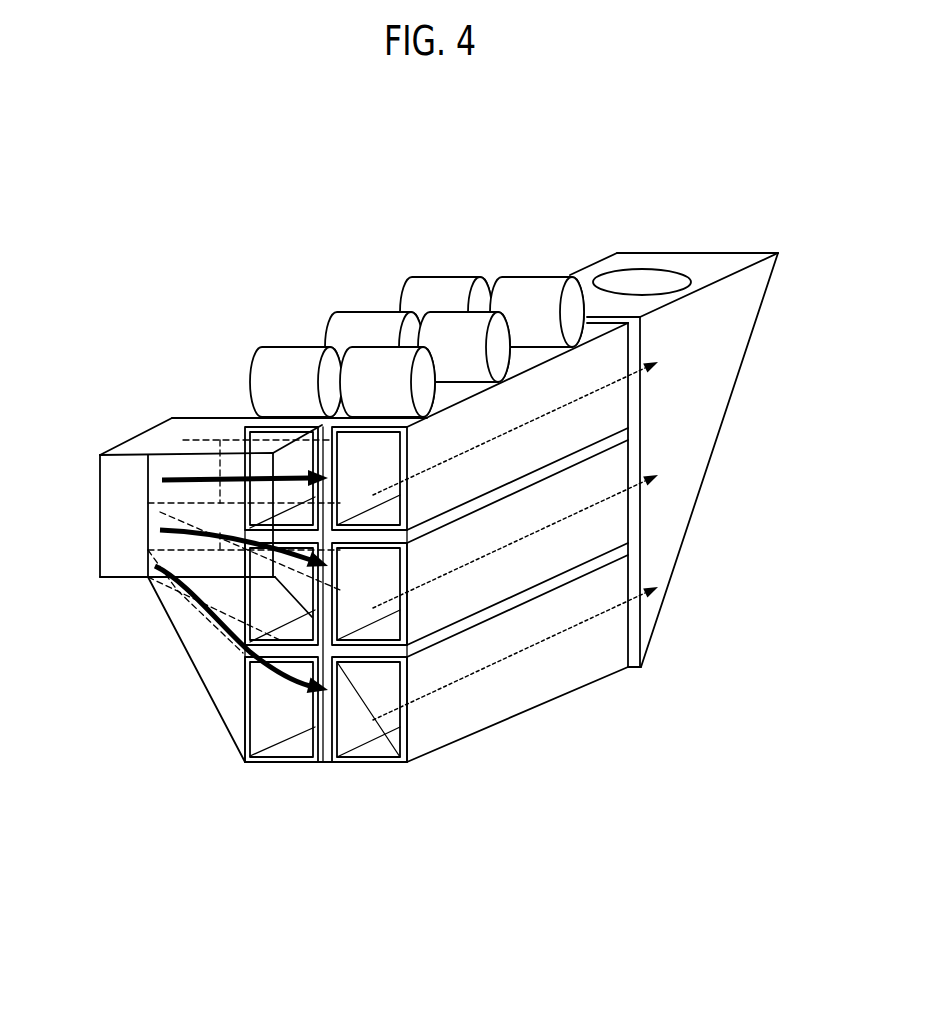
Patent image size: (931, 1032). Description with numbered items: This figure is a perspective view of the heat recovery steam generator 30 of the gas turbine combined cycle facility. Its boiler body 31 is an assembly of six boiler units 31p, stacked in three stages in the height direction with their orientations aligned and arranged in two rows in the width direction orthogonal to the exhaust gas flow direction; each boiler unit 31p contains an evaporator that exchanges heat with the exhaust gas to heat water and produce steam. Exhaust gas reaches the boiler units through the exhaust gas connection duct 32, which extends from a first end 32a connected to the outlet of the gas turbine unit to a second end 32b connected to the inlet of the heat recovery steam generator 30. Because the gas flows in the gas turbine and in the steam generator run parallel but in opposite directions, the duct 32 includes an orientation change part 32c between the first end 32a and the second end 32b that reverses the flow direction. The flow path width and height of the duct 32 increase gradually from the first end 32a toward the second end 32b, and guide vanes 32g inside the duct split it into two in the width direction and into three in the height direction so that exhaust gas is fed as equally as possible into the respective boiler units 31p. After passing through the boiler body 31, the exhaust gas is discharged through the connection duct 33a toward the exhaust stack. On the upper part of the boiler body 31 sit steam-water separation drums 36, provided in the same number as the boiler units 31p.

The heat recovery steam generator 30 is at (469, 529).
The boiler body 31 is at (495, 715).
The boiler unit 31p is at (250, 431).
The exhaust gas connection duct 32 is at (236, 606).
The first end 32a is at (113, 455).
The second end 32b is at (383, 767).
The orientation change part 32c is at (280, 700).
The guide vanes 32g is at (213, 435).
The connection duct 33a is at (728, 343).
The steam-water separation drum 36 is at (355, 350).